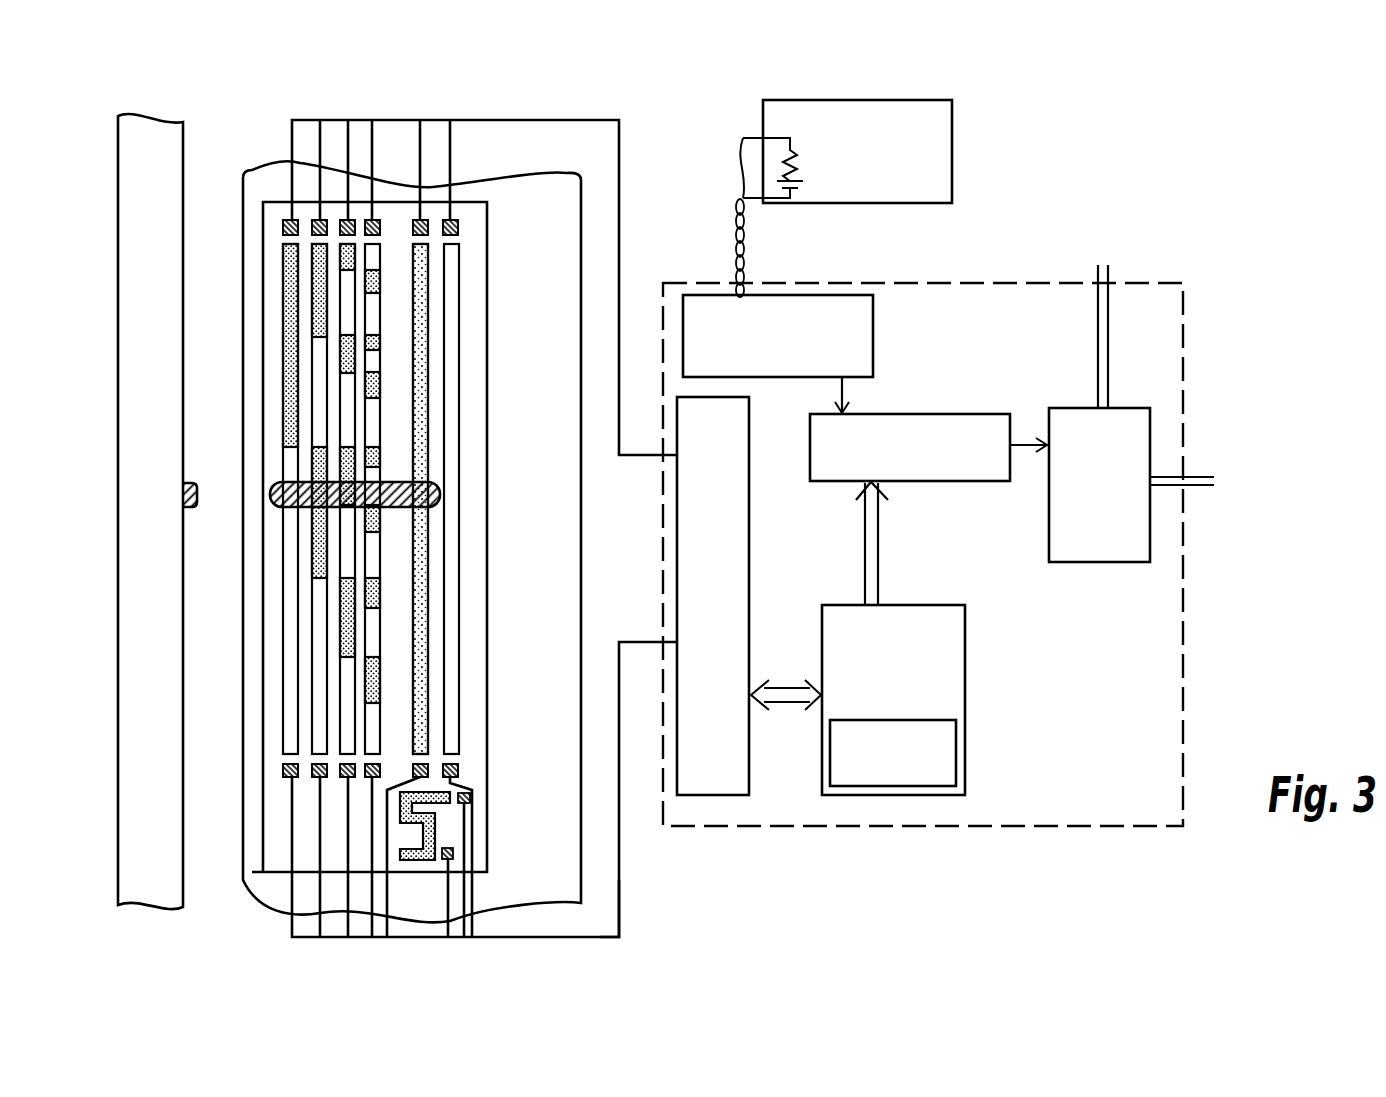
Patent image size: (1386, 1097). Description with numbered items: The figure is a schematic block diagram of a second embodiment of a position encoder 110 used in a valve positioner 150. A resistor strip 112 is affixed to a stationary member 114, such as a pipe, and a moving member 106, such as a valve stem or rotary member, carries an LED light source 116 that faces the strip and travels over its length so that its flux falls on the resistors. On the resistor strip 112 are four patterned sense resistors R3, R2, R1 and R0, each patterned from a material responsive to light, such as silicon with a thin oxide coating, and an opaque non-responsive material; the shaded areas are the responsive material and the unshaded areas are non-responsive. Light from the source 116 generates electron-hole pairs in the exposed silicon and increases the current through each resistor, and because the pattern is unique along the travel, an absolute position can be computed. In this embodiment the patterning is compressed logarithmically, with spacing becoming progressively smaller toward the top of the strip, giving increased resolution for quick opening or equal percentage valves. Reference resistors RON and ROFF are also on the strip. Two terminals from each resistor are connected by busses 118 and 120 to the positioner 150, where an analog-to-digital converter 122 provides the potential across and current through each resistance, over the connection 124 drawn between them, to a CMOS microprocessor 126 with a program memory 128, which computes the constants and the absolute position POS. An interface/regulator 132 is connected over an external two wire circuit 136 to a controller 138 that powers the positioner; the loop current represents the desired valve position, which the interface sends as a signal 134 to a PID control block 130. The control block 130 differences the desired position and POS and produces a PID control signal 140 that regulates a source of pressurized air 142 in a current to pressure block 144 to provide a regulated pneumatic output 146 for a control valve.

The moving member 106 is at (163, 862).
The position encoder 110 is at (490, 316).
The resistor strip 112 is at (487, 810).
The stationary member 114 is at (543, 895).
The LED light source 116 is at (192, 480).
The bus 118 is at (618, 873).
The bus 120 is at (387, 120).
The analog-to-digital converter 122 is at (734, 594).
The data bus 124 is at (782, 707).
The CMOS microprocessor 126 is at (908, 702).
The program memory 128 is at (906, 784).
The PID control block 130 is at (919, 476).
The interface/regulator 132 is at (797, 326).
The desired valve position signal 134 is at (845, 388).
The external two wire circuit 136 is at (747, 223).
The controller 138 is at (900, 173).
The PID control signal 140 is at (1032, 444).
The source of pressurized air 142 is at (1110, 335).
The current to pressure (I/P) block 144 is at (1117, 529).
The regulated pneumatic output 146 is at (1191, 476).
The valve positioner 150 is at (812, 283).
The patterned sense resistor R3 is at (290, 627).
The patterned sense resistor R2 is at (318, 663).
The patterned sense resistor R1 is at (347, 697).
The patterned sense resistor R0 is at (373, 733).
The reference resistor RON is at (420, 552).
The reference resistor ROFF is at (448, 600).